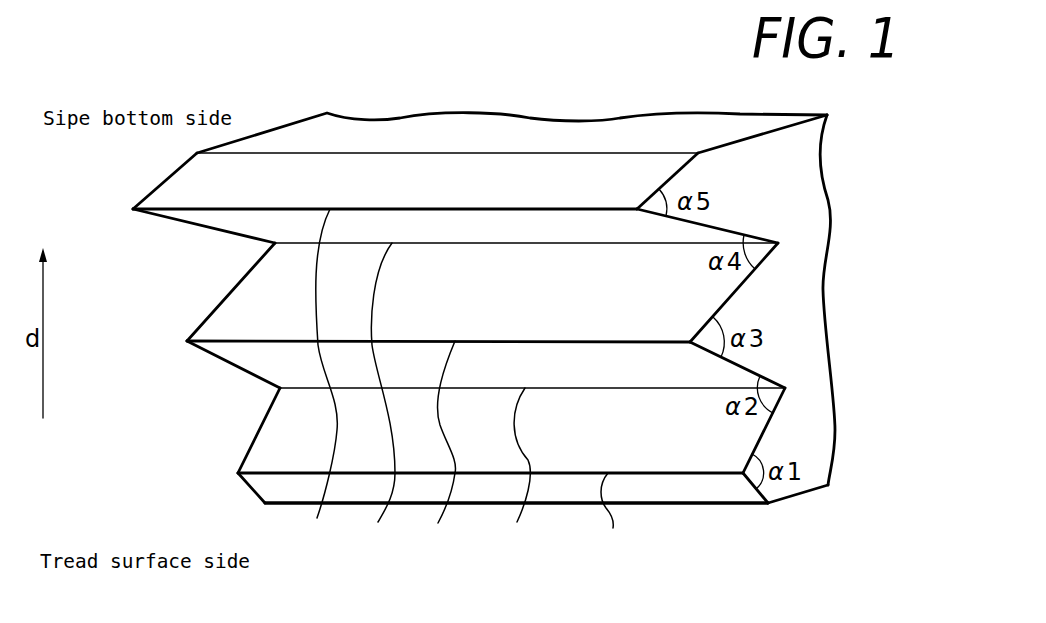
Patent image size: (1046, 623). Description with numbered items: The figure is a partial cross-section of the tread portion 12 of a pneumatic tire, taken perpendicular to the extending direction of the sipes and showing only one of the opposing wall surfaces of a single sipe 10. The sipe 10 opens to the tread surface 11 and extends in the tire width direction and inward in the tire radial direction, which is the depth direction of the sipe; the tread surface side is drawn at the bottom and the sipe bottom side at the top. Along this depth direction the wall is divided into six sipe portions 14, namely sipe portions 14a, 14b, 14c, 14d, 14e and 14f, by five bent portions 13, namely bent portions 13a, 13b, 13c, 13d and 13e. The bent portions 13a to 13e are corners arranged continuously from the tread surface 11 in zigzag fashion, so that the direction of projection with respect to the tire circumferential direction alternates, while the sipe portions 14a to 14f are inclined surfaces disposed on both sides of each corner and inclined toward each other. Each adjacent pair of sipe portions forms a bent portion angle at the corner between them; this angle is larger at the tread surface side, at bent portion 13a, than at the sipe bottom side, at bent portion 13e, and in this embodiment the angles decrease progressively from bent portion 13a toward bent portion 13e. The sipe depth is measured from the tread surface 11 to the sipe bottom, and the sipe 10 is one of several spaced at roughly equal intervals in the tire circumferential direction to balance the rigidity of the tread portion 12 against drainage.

The sipe 10 is at (500, 180).
The tread surface 11 is at (670, 503).
The tread portion 12 is at (798, 200).
The bent portions 13 is at (460, 412).
The first bent portion 13a is at (610, 518).
The second bent portion 13b is at (521, 474).
The third bent portion 13c is at (441, 450).
The fourth bent portion 13d is at (381, 401).
The fifth bent portion 13e is at (318, 384).
The sipe portions 14 is at (445, 319).
The first sipe portion 14a is at (469, 496).
The second sipe portion 14b is at (287, 437).
The third sipe portion 14c is at (268, 359).
The fourth sipe portion 14d is at (273, 292).
The fifth sipe portion 14e is at (243, 225).
The sixth sipe portion 14f is at (218, 182).